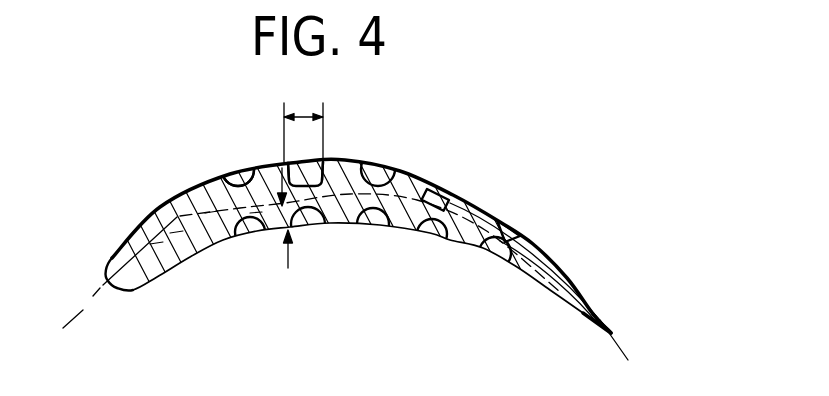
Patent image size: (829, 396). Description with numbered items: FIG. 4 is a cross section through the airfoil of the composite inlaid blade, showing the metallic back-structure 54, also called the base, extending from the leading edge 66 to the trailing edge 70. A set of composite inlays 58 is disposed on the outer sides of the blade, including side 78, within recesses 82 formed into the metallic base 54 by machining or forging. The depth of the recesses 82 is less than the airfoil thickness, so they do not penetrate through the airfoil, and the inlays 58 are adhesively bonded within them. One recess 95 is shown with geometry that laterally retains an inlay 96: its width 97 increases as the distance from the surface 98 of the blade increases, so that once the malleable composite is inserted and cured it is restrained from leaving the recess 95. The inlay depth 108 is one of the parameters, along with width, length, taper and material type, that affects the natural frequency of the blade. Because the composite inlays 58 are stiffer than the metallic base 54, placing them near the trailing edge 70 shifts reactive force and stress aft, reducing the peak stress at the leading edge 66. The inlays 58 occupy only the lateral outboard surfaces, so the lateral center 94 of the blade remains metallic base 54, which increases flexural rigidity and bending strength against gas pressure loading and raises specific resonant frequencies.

The metallic back-structure 54 is at (172, 217).
The composite inlays 58 is at (235, 172).
The leading edge 66 is at (120, 312).
The trailing edge 70 is at (634, 343).
The side of the blade 78 is at (338, 243).
The recesses 82 is at (394, 197).
The lateral center 94 is at (90, 298).
The recess 95 is at (308, 165).
The inlay 96 is at (316, 162).
The width of the recess 97 is at (303, 110).
The surface of the blade 98 is at (270, 148).
The inlay depth 108 is at (290, 258).